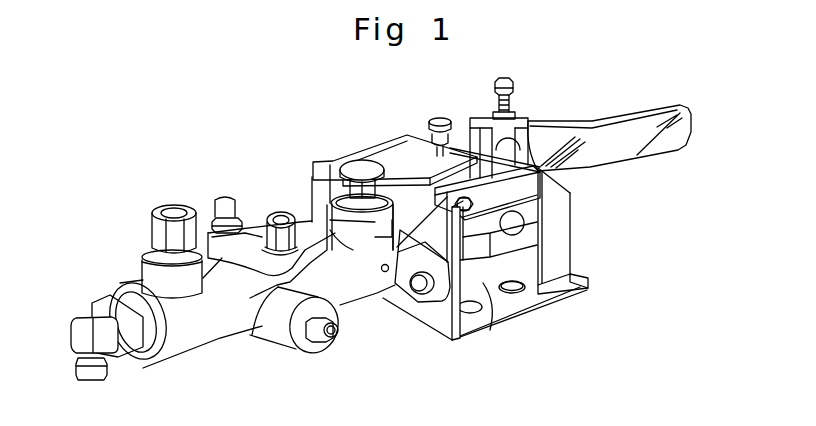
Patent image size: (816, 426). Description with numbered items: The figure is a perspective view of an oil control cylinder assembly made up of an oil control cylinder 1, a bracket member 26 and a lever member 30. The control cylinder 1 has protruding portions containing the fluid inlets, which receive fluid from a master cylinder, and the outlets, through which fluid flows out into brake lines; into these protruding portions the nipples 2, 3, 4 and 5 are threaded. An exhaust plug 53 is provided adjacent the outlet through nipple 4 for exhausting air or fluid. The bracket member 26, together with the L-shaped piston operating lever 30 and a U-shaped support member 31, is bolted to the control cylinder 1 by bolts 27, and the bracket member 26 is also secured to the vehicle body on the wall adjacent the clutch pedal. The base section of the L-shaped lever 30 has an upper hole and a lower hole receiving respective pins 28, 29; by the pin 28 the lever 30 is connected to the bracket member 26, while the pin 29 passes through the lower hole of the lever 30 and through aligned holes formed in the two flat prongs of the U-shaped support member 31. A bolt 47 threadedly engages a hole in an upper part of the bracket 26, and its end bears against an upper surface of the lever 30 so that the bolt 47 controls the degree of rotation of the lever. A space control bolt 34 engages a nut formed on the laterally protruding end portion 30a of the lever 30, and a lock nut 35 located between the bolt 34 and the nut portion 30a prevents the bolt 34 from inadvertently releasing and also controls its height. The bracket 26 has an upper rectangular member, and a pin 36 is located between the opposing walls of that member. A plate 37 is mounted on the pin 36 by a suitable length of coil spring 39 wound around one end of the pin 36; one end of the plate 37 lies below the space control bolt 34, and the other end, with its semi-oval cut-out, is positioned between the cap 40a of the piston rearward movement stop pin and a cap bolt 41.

The oil control cylinder 1 is at (214, 333).
The nipple 2 is at (316, 350).
The nipple 3 is at (132, 368).
The nipple 4 is at (277, 211).
The nipple 5 is at (160, 237).
The bracket member 26 is at (555, 267).
The bolts 27 is at (490, 330).
The pin 28 is at (520, 150).
The pin 29 is at (517, 222).
The L-shaped piston operating lever 30 is at (612, 137).
The laterally protruding end portion 30a is at (463, 147).
The U-shaped support member 31 is at (517, 238).
The space control bolt 34 is at (440, 118).
The lock nut 35 is at (428, 132).
The pin 36 is at (543, 200).
The plate 37 is at (407, 157).
The coil spring 39 is at (377, 157).
The cap 40a is at (355, 165).
The cap bolt 41 is at (308, 195).
The bolt 47 is at (508, 80).
The exhaust plug 53 is at (218, 202).